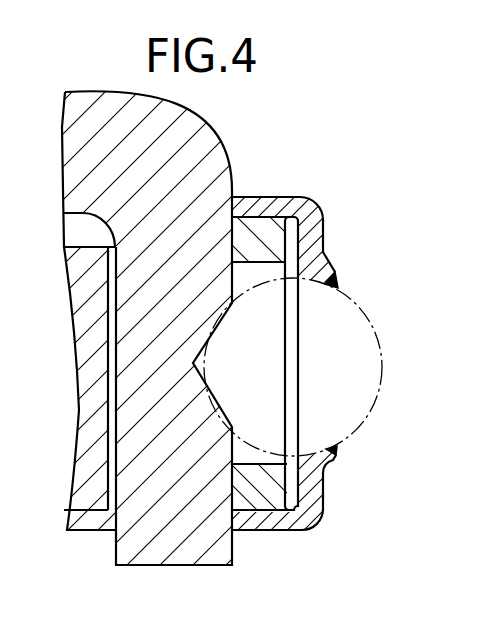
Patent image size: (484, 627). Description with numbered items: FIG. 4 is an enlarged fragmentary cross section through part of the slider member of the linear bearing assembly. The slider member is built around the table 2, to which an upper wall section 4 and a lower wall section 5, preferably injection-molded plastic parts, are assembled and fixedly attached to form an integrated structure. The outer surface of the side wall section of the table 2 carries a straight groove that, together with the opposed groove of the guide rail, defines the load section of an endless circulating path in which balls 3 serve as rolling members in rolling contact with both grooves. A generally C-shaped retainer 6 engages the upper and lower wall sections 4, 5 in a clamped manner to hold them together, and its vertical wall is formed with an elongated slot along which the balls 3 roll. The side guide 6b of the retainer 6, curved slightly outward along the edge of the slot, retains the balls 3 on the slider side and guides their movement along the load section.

The table 2 is at (153, 555).
The balls 3 is at (357, 343).
The upper wall section 4 is at (263, 230).
The lower wall section 5 is at (248, 498).
The retainer 6 is at (320, 232).
The side guide 6b is at (330, 270).